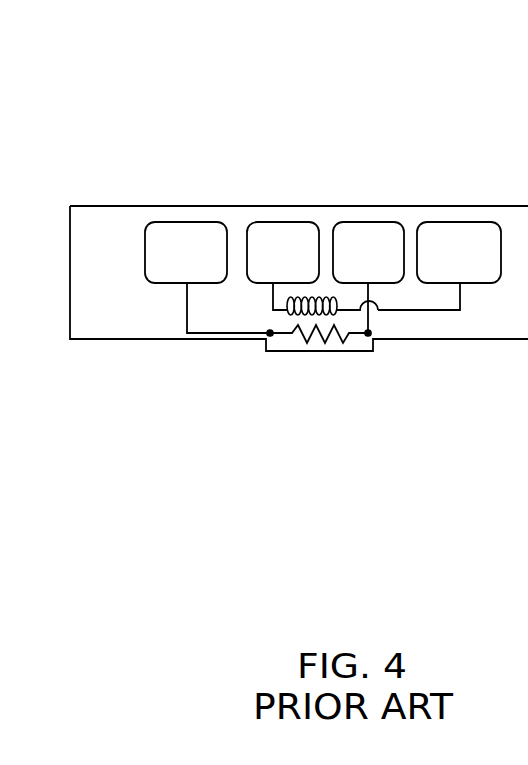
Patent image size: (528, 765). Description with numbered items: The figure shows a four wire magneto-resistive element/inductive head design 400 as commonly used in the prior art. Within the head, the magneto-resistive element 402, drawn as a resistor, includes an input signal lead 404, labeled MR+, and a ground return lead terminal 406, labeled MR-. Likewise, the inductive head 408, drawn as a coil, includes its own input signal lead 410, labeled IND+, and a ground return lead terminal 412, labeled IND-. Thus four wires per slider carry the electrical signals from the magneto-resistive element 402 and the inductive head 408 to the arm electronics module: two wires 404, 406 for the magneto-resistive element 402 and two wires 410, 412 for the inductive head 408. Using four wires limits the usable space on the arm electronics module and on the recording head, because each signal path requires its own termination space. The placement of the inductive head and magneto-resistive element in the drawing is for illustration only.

The four wire magneto-resistive element/inductive head design 400 is at (332, 107).
The magneto-resistive element 402 is at (298, 328).
The input signal lead 404 is at (160, 232).
The ground return lead terminal 406 is at (348, 229).
The inductive head 408 is at (337, 312).
The input signal lead 410 is at (448, 229).
The ground return lead terminal 412 is at (261, 225).